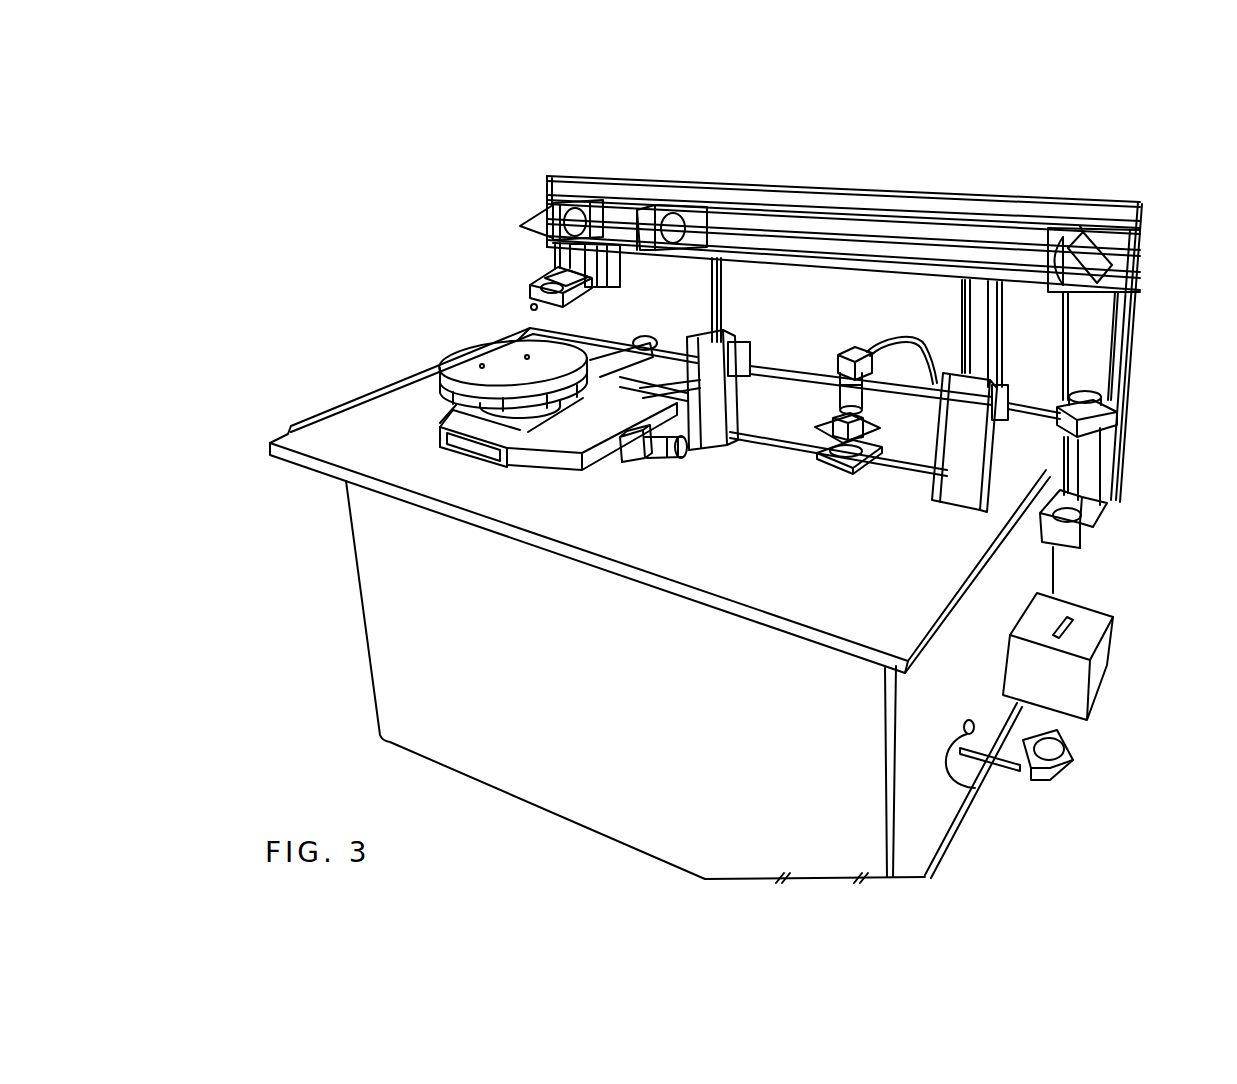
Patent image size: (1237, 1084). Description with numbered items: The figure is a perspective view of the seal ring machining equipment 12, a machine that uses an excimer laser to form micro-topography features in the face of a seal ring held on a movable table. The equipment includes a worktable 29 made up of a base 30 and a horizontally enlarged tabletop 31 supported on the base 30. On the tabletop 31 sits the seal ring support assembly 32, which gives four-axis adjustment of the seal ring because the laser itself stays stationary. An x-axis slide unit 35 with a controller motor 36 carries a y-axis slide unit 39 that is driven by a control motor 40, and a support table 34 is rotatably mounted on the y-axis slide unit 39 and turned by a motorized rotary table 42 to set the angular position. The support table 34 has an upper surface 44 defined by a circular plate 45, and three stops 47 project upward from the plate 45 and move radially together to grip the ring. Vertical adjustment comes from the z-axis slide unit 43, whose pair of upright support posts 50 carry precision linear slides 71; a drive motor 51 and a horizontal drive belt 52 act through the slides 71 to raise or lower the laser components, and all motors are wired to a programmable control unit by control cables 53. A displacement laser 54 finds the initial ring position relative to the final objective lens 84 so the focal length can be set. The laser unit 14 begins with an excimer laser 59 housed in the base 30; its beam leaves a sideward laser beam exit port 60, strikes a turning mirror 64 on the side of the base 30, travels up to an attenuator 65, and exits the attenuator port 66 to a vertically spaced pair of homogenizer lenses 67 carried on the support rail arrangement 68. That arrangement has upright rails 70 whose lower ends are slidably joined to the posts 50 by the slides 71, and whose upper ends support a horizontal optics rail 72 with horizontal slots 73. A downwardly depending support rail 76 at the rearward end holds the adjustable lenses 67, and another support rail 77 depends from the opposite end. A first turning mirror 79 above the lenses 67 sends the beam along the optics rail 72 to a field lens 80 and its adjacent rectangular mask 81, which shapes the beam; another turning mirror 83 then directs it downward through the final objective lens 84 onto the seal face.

The seal ring machining equipment 12 is at (273, 364).
The laser unit 14 is at (1055, 719).
The worktable 29 is at (368, 684).
The base 30 is at (594, 682).
The tabletop 31 is at (622, 500).
The seal ring support assembly 32 is at (385, 498).
The support table 34 is at (448, 298).
The x-axis slide unit 35 is at (517, 462).
The controller motor 36 is at (657, 450).
The y-axis slide unit 39 is at (447, 417).
The control motor 40 is at (640, 346).
The motorized rotary table 42 is at (443, 433).
The z-axis slide unit 43 is at (818, 388).
The upper surface 44 is at (446, 362).
The circular plate 45 is at (487, 363).
The stops 47 is at (445, 360).
The upright support posts 50 is at (729, 430).
The drive motor 51 is at (853, 347).
The drive belt 52 is at (883, 467).
The control cables 53 is at (813, 374).
The displacement laser 54 is at (482, 366).
The excimer laser 59 is at (932, 856).
The laser beam exit port 60 is at (972, 787).
The turning mirror 64 is at (1062, 760).
The attenuator 65 is at (1094, 633).
The attenuator port 66 is at (1072, 614).
The homogenizer lenses 67 is at (1107, 427).
The support rail arrangement 68 is at (887, 192).
The upright rails 70 is at (735, 272).
The precision linear slides 71 is at (747, 362).
The optics rail 72 is at (1127, 203).
The horizontal slots 73 is at (1140, 244).
The support rail 76 is at (1122, 350).
The support rail 77 is at (547, 230).
The first turning mirror 79 is at (1077, 233).
The field lens 80 is at (680, 177).
The mask 81 is at (640, 213).
The turning mirror 83 is at (545, 207).
The final objective lens 84 is at (528, 300).